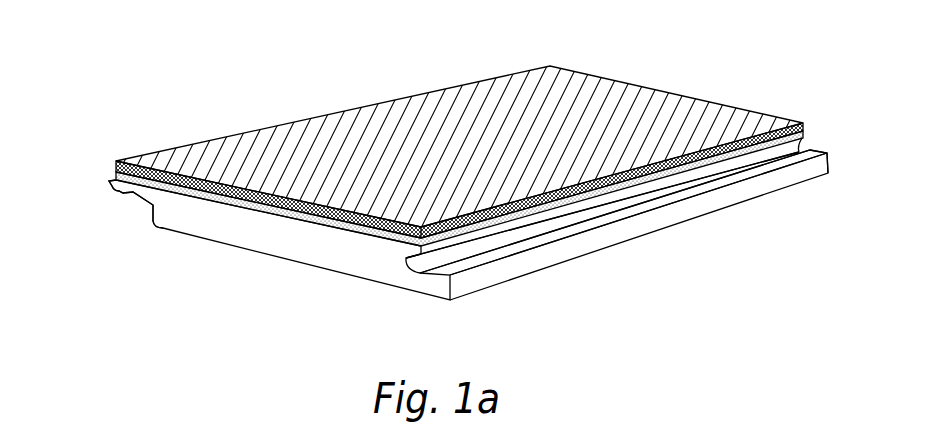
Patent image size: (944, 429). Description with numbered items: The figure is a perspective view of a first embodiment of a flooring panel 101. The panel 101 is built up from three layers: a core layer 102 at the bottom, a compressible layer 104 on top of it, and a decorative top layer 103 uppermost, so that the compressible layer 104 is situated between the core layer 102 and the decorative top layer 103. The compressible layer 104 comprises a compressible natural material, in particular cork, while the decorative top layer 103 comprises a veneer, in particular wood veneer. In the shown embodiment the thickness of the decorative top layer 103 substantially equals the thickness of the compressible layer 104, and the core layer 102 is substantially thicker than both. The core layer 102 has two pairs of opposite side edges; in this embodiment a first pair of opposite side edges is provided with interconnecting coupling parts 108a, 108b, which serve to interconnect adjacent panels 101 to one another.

The flooring panel 101 is at (126, 126).
The core layer 102 is at (322, 247).
The decorative top layer 103 is at (440, 127).
The compressible layer 104 is at (232, 196).
The interconnecting coupling part 108a is at (110, 188).
The interconnecting coupling part 108b is at (593, 240).